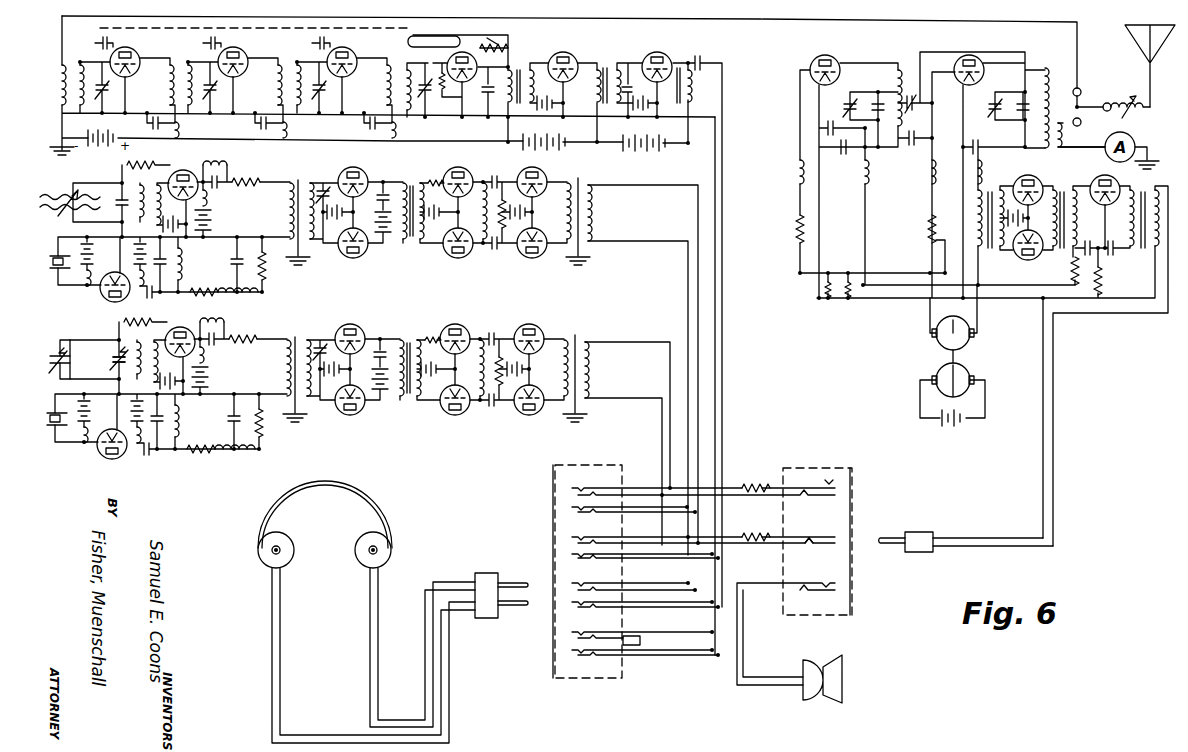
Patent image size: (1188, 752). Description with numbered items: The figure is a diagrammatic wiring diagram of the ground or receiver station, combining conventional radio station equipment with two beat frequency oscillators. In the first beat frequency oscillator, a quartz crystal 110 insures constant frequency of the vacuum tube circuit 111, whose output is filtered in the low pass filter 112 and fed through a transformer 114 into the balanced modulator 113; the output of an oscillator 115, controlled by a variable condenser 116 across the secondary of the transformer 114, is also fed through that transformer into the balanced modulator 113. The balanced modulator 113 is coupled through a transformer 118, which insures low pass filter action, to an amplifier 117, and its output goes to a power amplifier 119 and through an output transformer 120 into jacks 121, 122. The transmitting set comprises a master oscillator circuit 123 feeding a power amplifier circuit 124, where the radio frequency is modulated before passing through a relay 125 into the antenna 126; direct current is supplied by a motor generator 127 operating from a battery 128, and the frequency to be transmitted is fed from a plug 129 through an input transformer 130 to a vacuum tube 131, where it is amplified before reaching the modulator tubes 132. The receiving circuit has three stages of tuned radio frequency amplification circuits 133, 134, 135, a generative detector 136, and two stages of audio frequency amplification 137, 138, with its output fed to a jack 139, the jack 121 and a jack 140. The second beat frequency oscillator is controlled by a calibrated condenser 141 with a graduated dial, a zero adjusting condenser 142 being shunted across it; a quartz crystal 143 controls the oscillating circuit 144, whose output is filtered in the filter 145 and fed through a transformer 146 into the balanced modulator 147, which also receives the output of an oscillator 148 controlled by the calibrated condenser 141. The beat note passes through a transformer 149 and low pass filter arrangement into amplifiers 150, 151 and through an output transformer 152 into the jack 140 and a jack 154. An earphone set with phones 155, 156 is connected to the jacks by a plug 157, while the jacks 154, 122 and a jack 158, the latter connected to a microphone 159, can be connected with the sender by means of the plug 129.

The quartz crystal 110 is at (53, 270).
The vacuum tube circuit 111 is at (101, 295).
The low pass filter 112 is at (218, 292).
The balanced modulator 113 is at (357, 205).
The transformer 114 is at (297, 180).
The oscillator 115 is at (183, 170).
The variable condenser 116 is at (318, 180).
The amplifier 117 is at (464, 205).
The transformer 118 is at (403, 184).
The power amplifier 119 is at (540, 178).
The output transformer 120 is at (580, 184).
The jack 121 is at (638, 598).
The jack 122 is at (807, 543).
The master oscillator circuit 123 is at (832, 52).
The power amplifier circuit 124 is at (990, 52).
The relay 125 is at (1078, 104).
The antenna 126 is at (1130, 45).
The motor generator 127 is at (932, 331).
The battery 128 is at (945, 420).
The plug 129 is at (915, 533).
The input transformer 130 is at (1140, 255).
The vacuum tube 131 is at (1098, 182).
The modulator tubes 132 is at (1033, 178).
The tuned radio frequency amplification circuit 133 is at (143, 52).
The tuned radio frequency amplification circuit 134 is at (235, 48).
The tuned radio frequency amplification circuit 135 is at (340, 48).
The generative detector 136 is at (455, 37).
The audio frequency amplification stage 137 is at (563, 59).
The audio frequency amplification stage 138 is at (658, 59).
The jack 139 is at (655, 640).
The jack 140 is at (630, 500).
The calibrated condenser 141 is at (55, 356).
The zero adjusting condenser 142 is at (116, 365).
The quartz crystal 143 is at (47, 436).
The oscillating circuit 144 is at (112, 458).
The filter 145 is at (222, 454).
The transformer 146 is at (295, 345).
The balanced modulator 147 is at (350, 363).
The oscillator 148 is at (165, 340).
The transformer 149 is at (408, 330).
The amplifier 150 is at (453, 324).
The amplifier 151 is at (530, 324).
The output transformer 152 is at (583, 336).
The jack 154 is at (805, 497).
The phone 155 is at (292, 555).
The phone 156 is at (358, 560).
The plug 157 is at (481, 575).
The jack 158 is at (630, 550).
The microphone 159 is at (808, 672).